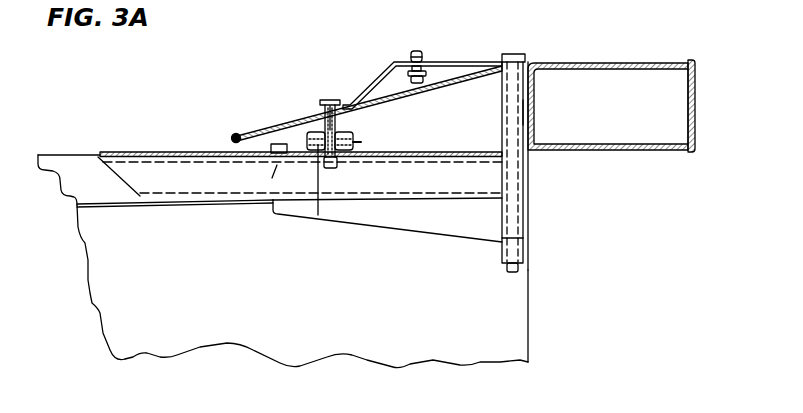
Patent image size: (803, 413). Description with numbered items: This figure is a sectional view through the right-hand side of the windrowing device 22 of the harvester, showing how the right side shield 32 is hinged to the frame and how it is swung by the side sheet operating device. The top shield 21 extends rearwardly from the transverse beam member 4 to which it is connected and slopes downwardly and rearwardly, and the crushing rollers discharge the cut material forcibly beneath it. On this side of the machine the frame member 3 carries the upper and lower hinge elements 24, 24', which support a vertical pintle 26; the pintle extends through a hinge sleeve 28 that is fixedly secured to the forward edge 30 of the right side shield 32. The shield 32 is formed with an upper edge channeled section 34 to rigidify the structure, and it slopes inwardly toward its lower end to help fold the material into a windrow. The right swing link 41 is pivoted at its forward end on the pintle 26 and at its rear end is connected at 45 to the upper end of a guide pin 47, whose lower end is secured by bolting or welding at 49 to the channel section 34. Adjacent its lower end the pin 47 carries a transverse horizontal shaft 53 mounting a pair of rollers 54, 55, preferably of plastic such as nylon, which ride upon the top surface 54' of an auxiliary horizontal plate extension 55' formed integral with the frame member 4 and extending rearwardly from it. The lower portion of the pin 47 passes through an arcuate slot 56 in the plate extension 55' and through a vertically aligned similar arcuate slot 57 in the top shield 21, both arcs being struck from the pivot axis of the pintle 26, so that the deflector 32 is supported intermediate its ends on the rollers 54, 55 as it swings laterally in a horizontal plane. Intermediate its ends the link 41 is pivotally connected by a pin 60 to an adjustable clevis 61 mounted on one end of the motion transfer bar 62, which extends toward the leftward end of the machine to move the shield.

The member 3 is at (620, 63).
The transverse beam member 4 is at (695, 150).
The top shield 21 is at (473, 76).
The windrowing device 22 is at (85, 294).
The upper hinge element 24 is at (548, 162).
The lower hinge element 24' is at (492, 255).
The vertical pintle 26 is at (515, 53).
The hinge sleeve 28 is at (530, 212).
The forward edge 30 is at (530, 362).
The right side shield 32 is at (259, 296).
The upper edge channeled section 34 is at (83, 160).
The right swing link 41 is at (383, 67).
The connection 45 is at (325, 98).
The guide pin 47 is at (348, 100).
The securing point 49 is at (300, 160).
The transverse horizontal shaft 53 is at (361, 143).
The roller 54 is at (295, 124).
The top surface 54' is at (264, 169).
The roller 55 is at (368, 131).
The auxiliary horizontal plate extension 55' is at (529, 112).
The arcuate slot 56 is at (318, 215).
The arcuate slot 57 is at (315, 113).
The pin 60 is at (416, 50).
The adjustable clevis 61 is at (423, 52).
The motion transfer bar 62 is at (429, 78).